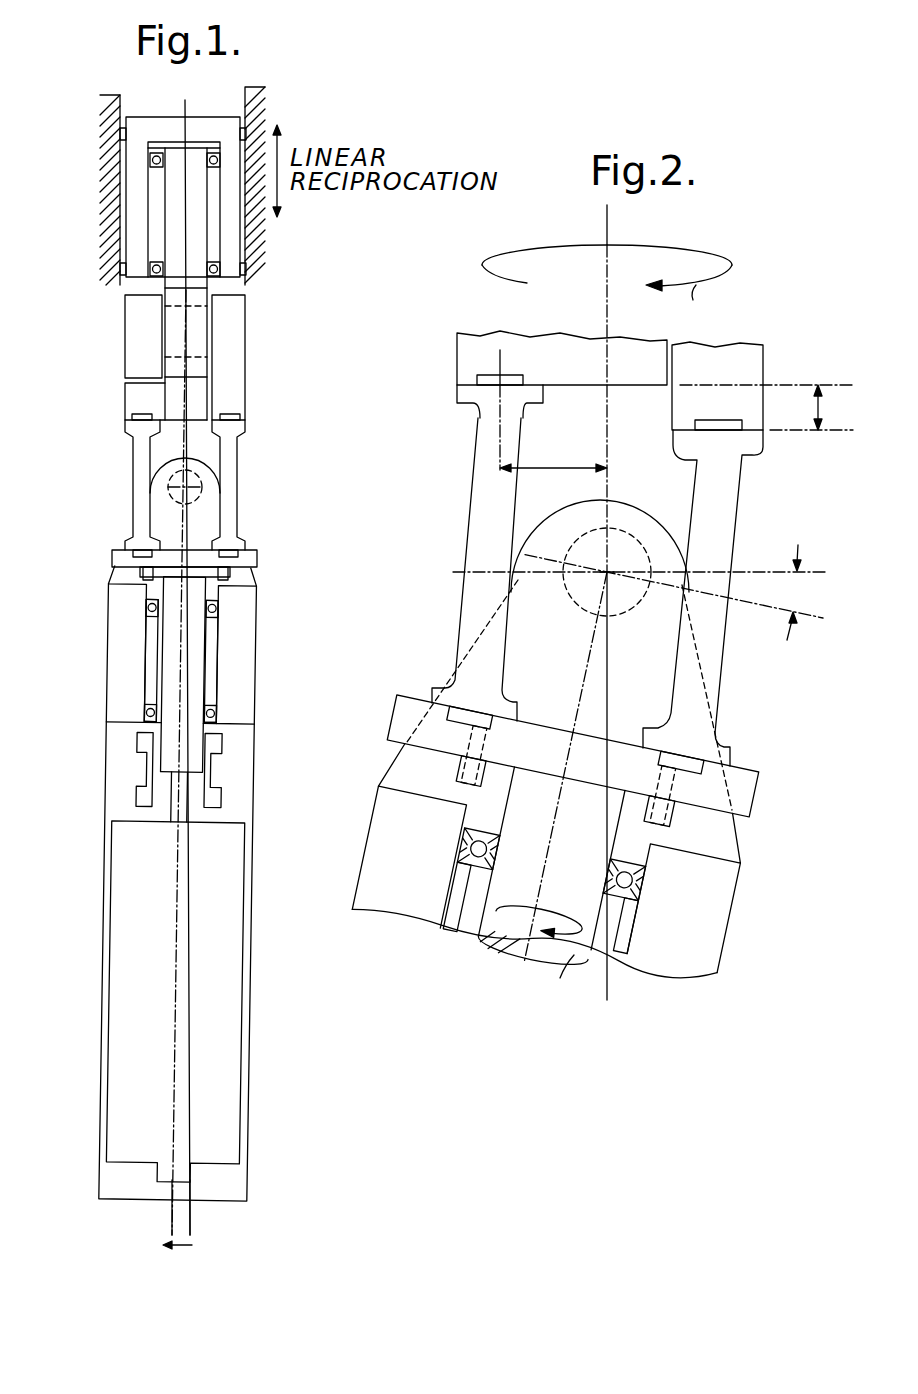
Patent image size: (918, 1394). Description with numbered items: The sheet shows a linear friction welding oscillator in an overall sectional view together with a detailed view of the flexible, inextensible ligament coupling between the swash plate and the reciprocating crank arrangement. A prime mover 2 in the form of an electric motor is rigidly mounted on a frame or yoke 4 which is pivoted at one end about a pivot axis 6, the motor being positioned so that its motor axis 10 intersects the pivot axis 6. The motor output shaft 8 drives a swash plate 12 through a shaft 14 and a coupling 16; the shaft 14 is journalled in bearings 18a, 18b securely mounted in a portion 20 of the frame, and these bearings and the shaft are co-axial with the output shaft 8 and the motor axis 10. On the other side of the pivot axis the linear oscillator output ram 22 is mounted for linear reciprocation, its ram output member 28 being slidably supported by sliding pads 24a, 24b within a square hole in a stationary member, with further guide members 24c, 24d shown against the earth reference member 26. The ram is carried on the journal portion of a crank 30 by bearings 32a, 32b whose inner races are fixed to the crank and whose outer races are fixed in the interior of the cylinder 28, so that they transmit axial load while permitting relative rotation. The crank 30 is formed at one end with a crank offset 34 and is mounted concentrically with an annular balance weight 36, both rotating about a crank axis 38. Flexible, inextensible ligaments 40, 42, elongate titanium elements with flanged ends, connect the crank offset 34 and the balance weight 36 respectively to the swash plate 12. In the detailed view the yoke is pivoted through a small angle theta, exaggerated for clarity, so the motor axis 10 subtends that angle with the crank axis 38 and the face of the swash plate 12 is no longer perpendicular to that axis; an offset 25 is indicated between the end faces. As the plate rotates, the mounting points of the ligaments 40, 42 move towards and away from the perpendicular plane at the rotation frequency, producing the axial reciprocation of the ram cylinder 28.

In FIG. 1, the prime mover 2 is at (126, 1062).
In FIG. 1, the frame or yoke 4 is at (242, 762).
In FIG. 1, the pivot axis 6 is at (197, 497).
In FIG. 2, the pivot axis 6 is at (639, 558).
In FIG. 1, the output shaft 8 is at (175, 812).
In FIG. 1, the motor axis 10 is at (178, 983).
In FIG. 2, the motor axis 10 is at (548, 890).
In FIG. 1, the swash plate 12 is at (248, 562).
In FIG. 2, the swash plate 12 is at (407, 705).
In FIG. 1, the shaft 14 is at (195, 672).
In FIG. 2, the shaft 14 is at (508, 950).
In FIG. 1, the coupling 16 is at (134, 769).
In FIG. 1, the bearing 18a is at (206, 608).
In FIG. 2, the bearing 18a is at (475, 875).
In FIG. 1, the bearing 18b is at (208, 710).
In FIG. 1, the portion of the frame 20 is at (242, 625).
In FIG. 2, the portion of the frame 20 is at (551, 863).
In FIG. 1, the linear oscillator output ram 22 is at (92, 197).
In FIG. 1, the sliding pad 24a is at (118, 132).
In FIG. 1, the sliding pad 24b is at (118, 268).
In FIG. 1, the guide stop 24c is at (245, 128).
In FIG. 1, the guide stop 24d is at (247, 268).
In FIG. 2, the offset distance 25 is at (837, 407).
In FIG. 1, the earth reference member 26 is at (255, 252).
In FIG. 1, the ram output member 28 is at (198, 122).
In FIG. 1, the crank 30 is at (197, 300).
In FIG. 1, the bearing 32a is at (207, 165).
In FIG. 1, the bearing 32b is at (157, 262).
In FIG. 1, the crank offset 34 is at (140, 398).
In FIG. 2, the crank offset 34 is at (483, 357).
In FIG. 1, the annular balance weight 36 is at (232, 378).
In FIG. 2, the annular balance weight 36 is at (735, 357).
In FIG. 1, the crank axis 38 is at (190, 445).
In FIG. 2, the crank axis 38 is at (607, 295).
In FIG. 1, the flexible inextensible ligament 40 is at (137, 478).
In FIG. 2, the flexible inextensible ligament 40 is at (487, 503).
In FIG. 1, the flexible inextensible ligament 42 is at (232, 470).
In FIG. 2, the flexible inextensible ligament 42 is at (728, 523).